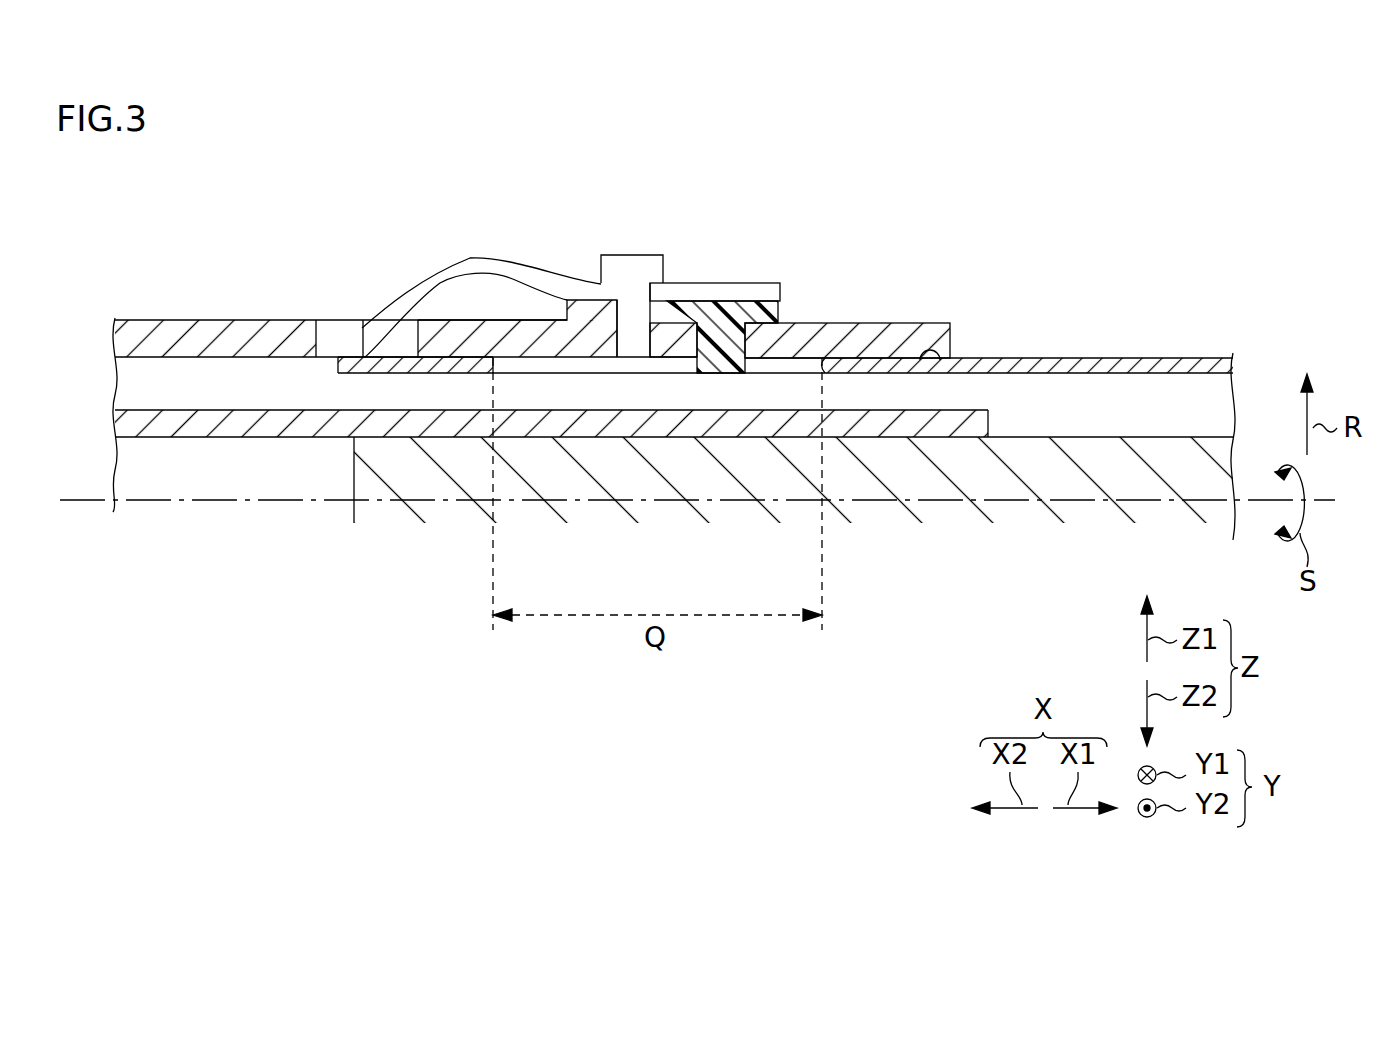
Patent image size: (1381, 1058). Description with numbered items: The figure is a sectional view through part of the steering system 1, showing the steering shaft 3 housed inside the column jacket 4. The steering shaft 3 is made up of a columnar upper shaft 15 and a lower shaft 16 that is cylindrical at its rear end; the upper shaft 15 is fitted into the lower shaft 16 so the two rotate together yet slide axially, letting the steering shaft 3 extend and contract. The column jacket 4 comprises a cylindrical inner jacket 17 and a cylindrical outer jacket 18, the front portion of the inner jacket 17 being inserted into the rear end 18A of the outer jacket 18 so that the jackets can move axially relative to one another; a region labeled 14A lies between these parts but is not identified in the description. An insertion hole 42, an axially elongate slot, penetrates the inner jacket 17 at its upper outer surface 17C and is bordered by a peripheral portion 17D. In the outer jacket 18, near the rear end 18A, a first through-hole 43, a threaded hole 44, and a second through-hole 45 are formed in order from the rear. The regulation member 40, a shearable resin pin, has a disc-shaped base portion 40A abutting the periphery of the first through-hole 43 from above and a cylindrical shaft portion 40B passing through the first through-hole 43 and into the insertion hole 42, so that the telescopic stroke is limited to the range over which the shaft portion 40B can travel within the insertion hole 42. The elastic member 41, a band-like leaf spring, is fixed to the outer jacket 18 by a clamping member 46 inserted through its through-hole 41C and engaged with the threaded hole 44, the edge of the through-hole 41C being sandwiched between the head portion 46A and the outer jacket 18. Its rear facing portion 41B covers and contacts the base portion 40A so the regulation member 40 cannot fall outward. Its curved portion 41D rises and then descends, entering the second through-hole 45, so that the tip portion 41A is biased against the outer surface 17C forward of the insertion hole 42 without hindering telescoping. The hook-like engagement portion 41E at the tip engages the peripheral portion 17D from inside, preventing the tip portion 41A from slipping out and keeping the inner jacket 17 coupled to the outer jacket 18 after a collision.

The steering system 1 is at (1103, 275).
The steering shaft 3 is at (267, 572).
The column jacket 4 is at (913, 253).
The gap 14A is at (330, 365).
The upper shaft 15 is at (393, 465).
The lower shaft 16 is at (300, 437).
The inner jacket 17 is at (1047, 358).
The outer surface 17C is at (942, 373).
The peripheral portion 17D is at (495, 362).
The outer jacket 18 is at (920, 323).
The rear end 18A is at (953, 347).
The regulation member 40 is at (760, 223).
The base portion 40A is at (776, 322).
The shaft portion 40B is at (773, 342).
The elastic member 41 is at (532, 277).
The tip portion 41A is at (387, 345).
The facing portion 41B is at (747, 293).
The through-hole 41C is at (623, 277).
The curved portion 41D is at (473, 262).
The engagement portion 41E is at (362, 327).
The insertion hole 42 is at (675, 365).
The first through-hole 43 is at (710, 347).
The threaded hole 44 is at (637, 320).
The second through-hole 45 is at (324, 335).
The clamping member 46 is at (589, 151).
The head portion 46A is at (607, 257).